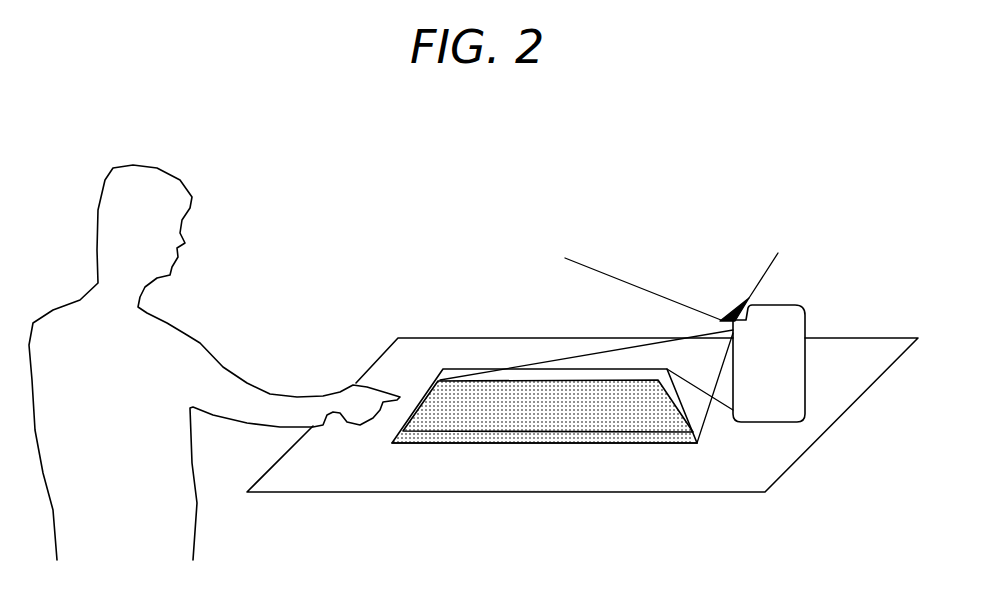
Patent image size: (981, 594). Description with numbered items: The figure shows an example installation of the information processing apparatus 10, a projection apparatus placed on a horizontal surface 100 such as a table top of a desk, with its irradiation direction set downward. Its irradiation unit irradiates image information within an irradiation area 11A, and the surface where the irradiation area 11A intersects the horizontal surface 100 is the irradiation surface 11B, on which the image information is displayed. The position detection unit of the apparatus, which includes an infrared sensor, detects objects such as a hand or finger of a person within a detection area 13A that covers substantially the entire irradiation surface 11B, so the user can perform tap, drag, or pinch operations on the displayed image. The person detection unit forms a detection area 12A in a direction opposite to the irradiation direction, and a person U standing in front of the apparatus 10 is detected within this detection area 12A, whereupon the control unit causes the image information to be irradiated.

The person U is at (143, 163).
The horizontal surface 100 is at (847, 408).
The irradiation area 11A is at (558, 360).
The irradiation surface 11B is at (556, 445).
The detection area 13A is at (693, 410).
The information processing apparatus 10 is at (806, 321).
The detection area 12A is at (767, 275).